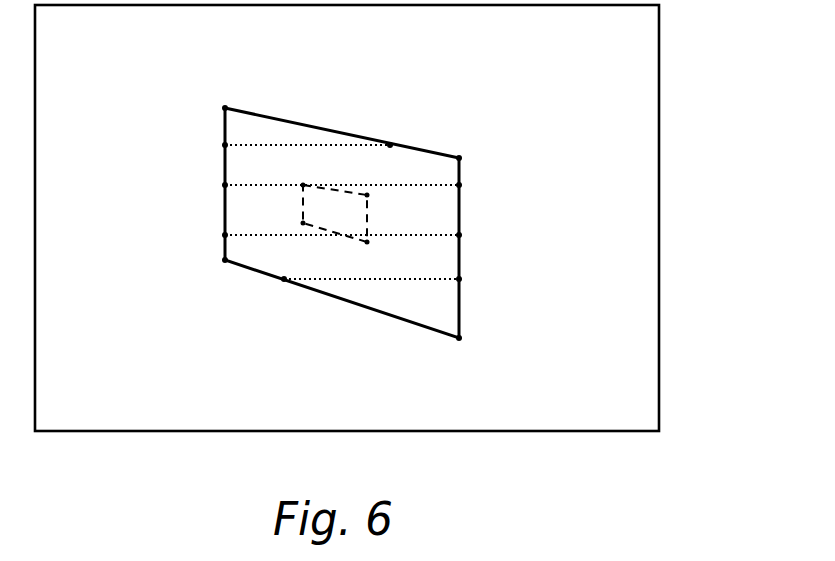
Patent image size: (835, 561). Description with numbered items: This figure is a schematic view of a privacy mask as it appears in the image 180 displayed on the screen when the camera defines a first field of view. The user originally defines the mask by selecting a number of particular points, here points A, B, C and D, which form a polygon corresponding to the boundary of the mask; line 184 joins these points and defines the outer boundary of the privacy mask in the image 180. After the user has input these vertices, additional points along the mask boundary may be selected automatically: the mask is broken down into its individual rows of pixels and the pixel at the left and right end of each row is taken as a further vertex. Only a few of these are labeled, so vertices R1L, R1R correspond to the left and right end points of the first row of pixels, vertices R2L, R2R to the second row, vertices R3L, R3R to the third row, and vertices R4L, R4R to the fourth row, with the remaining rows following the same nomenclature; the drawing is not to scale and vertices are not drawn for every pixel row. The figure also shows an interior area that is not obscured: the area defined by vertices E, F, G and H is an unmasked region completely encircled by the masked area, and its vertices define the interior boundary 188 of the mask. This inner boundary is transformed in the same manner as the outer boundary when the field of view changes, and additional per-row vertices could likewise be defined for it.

The image 180 is at (648, 127).
The line 184 is at (330, 297).
The interior boundary 188 is at (325, 187).
The point A is at (225, 108).
The point B is at (459, 158).
The point C is at (459, 338).
The point D is at (225, 260).
The vertex E is at (303, 185).
The vertex F is at (367, 195).
The vertex G is at (367, 242).
The vertex H is at (303, 223).
The vertex R1L is at (225, 145).
The vertex R2L is at (225, 185).
The vertex R3L is at (225, 235).
The vertex R4L is at (284, 279).
The vertex R1R is at (390, 145).
The vertex R2R is at (459, 185).
The vertex R3R is at (459, 235).
The vertex R4R is at (459, 279).